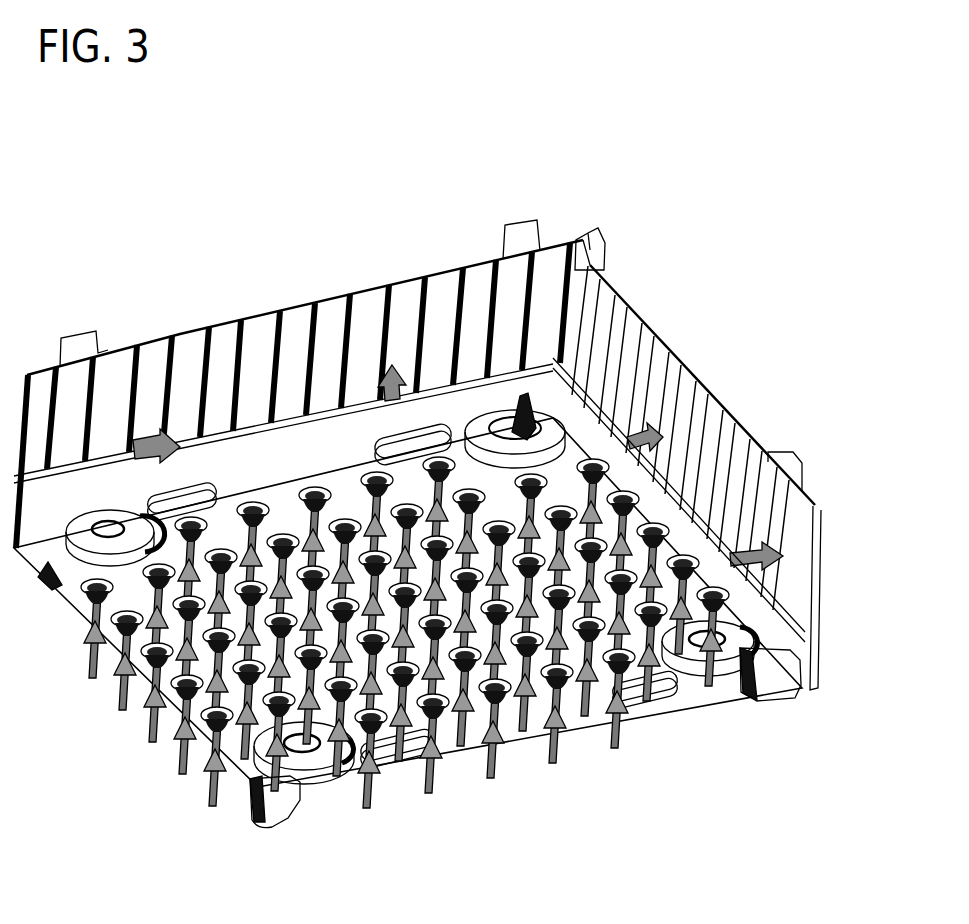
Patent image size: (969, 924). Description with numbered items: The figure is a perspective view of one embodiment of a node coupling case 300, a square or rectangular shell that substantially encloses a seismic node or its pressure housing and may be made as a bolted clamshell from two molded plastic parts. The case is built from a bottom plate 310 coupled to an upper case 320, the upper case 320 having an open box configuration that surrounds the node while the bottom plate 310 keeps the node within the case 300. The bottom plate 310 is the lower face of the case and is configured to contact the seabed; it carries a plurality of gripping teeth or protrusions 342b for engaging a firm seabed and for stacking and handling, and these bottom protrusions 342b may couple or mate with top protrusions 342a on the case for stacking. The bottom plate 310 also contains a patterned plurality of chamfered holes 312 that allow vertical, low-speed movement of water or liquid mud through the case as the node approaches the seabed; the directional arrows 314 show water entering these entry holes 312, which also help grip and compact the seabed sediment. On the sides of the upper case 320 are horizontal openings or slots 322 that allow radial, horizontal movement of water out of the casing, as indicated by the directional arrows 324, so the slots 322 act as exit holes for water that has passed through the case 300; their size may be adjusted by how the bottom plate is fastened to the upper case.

The node coupling case 300 is at (315, 201).
The bottom plate 310 is at (540, 742).
The holes 312 is at (567, 723).
The directional arrows 314 is at (625, 718).
The upper case 320 is at (170, 345).
The horizontal openings or slots 322 is at (680, 513).
The directional arrows 324 is at (617, 455).
The top protrusions 342a is at (594, 237).
The gripping teeth or protrusions 342b is at (258, 828).